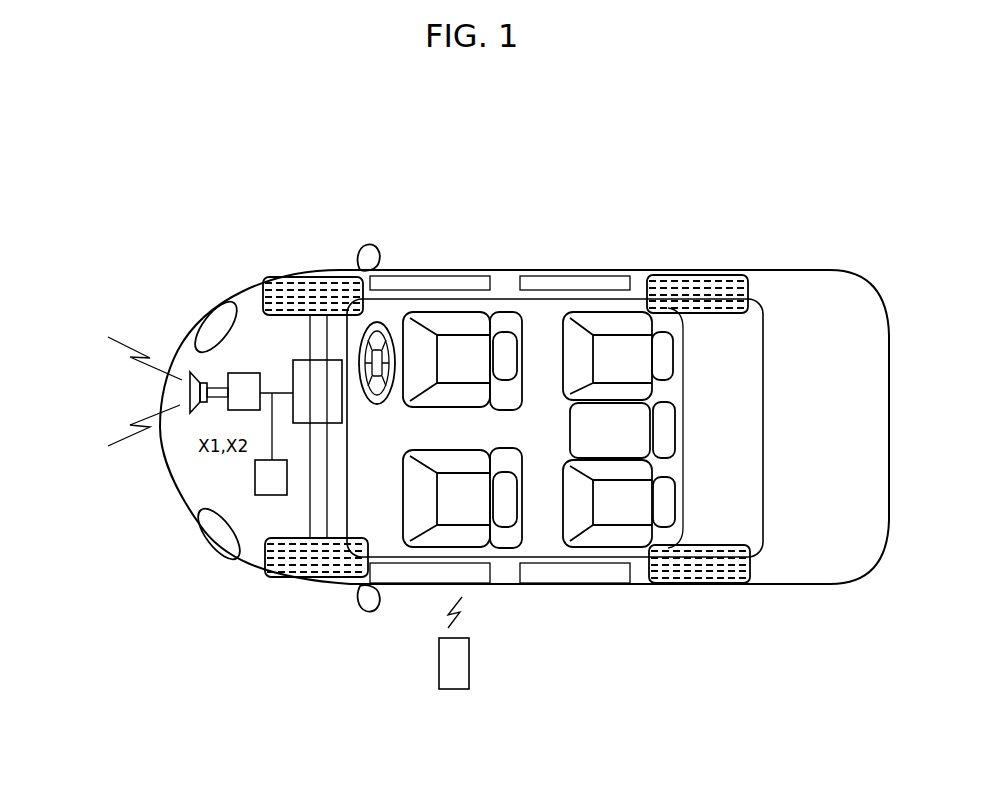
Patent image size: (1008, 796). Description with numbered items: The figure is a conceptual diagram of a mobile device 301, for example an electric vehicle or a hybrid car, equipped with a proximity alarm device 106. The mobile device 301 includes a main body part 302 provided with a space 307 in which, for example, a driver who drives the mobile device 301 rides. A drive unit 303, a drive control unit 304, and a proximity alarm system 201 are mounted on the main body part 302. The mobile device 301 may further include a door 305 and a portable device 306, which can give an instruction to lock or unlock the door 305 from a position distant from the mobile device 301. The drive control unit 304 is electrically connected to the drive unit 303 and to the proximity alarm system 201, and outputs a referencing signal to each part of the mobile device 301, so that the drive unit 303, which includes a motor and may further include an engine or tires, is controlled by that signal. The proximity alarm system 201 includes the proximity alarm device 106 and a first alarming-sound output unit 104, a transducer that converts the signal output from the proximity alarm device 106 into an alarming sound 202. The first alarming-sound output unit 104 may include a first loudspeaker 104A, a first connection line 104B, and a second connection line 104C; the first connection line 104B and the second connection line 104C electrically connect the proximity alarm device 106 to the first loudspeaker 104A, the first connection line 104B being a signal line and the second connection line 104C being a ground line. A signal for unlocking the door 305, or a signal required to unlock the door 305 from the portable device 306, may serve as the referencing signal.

The first alarming-sound output unit 104 is at (133, 289).
The first loudspeaker 104A is at (188, 378).
The first connection line 104B is at (201, 385).
The second connection line 104C is at (217, 388).
The proximity alarm device 106 is at (255, 373).
The proximity alarm system 201 is at (248, 157).
The alarming sound 202 is at (128, 385).
The mobile device 301 is at (792, 225).
The main body part 302 is at (580, 278).
The drive unit 303 is at (333, 367).
The drive control unit 304 is at (268, 487).
The door 305 is at (541, 277).
The portable device 306 is at (460, 658).
The space 307 is at (542, 527).